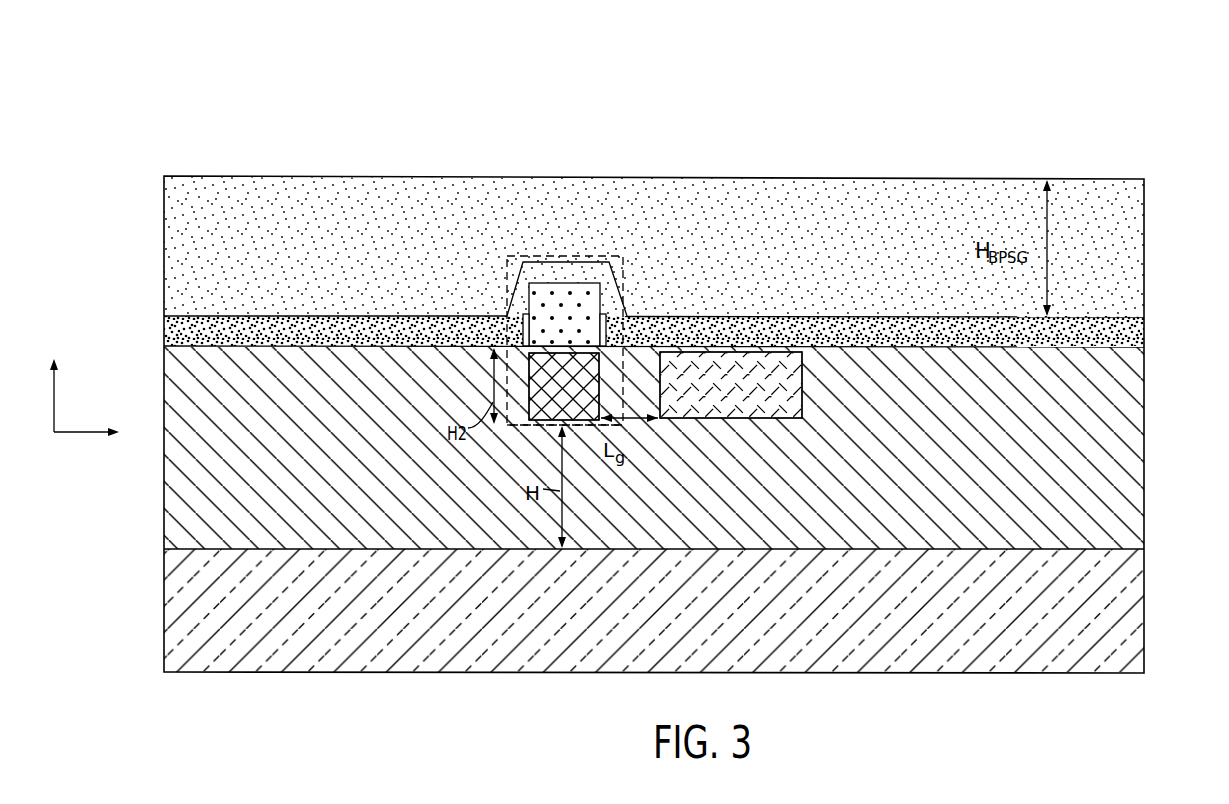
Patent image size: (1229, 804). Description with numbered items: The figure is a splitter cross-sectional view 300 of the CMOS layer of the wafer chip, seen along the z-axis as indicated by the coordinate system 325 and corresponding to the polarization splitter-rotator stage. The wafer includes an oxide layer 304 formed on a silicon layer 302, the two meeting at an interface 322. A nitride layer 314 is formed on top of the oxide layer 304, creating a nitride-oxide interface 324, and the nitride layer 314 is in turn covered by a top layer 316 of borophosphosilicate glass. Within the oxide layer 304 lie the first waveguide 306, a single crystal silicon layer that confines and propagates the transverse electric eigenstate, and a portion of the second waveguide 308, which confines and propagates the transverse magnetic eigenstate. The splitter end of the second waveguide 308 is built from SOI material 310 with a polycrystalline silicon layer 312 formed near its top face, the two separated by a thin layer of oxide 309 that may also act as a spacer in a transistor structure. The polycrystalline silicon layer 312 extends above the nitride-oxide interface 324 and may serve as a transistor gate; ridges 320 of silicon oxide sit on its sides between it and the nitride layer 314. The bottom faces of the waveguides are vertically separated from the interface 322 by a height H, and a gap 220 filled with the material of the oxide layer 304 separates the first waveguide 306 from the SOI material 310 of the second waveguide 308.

The splitter cross-sectional view 300 is at (202, 97).
The silicon layer 302 is at (934, 662).
The oxide layer 304 is at (1130, 442).
The first waveguide 306 is at (736, 404).
The second waveguide 308 is at (506, 408).
The thin layer of oxide 309 is at (557, 342).
The SOI material 310 is at (540, 383).
The polycrystalline silicon layer 312 is at (572, 292).
The nitride layer 314 is at (1135, 336).
The top layer 316 is at (1130, 215).
The ridges 320 is at (524, 331).
The interface 322 is at (1144, 549).
The nitride-oxide interface 324 is at (1145, 357).
The coordinate system 325 is at (97, 482).
The gap 220 is at (623, 427).